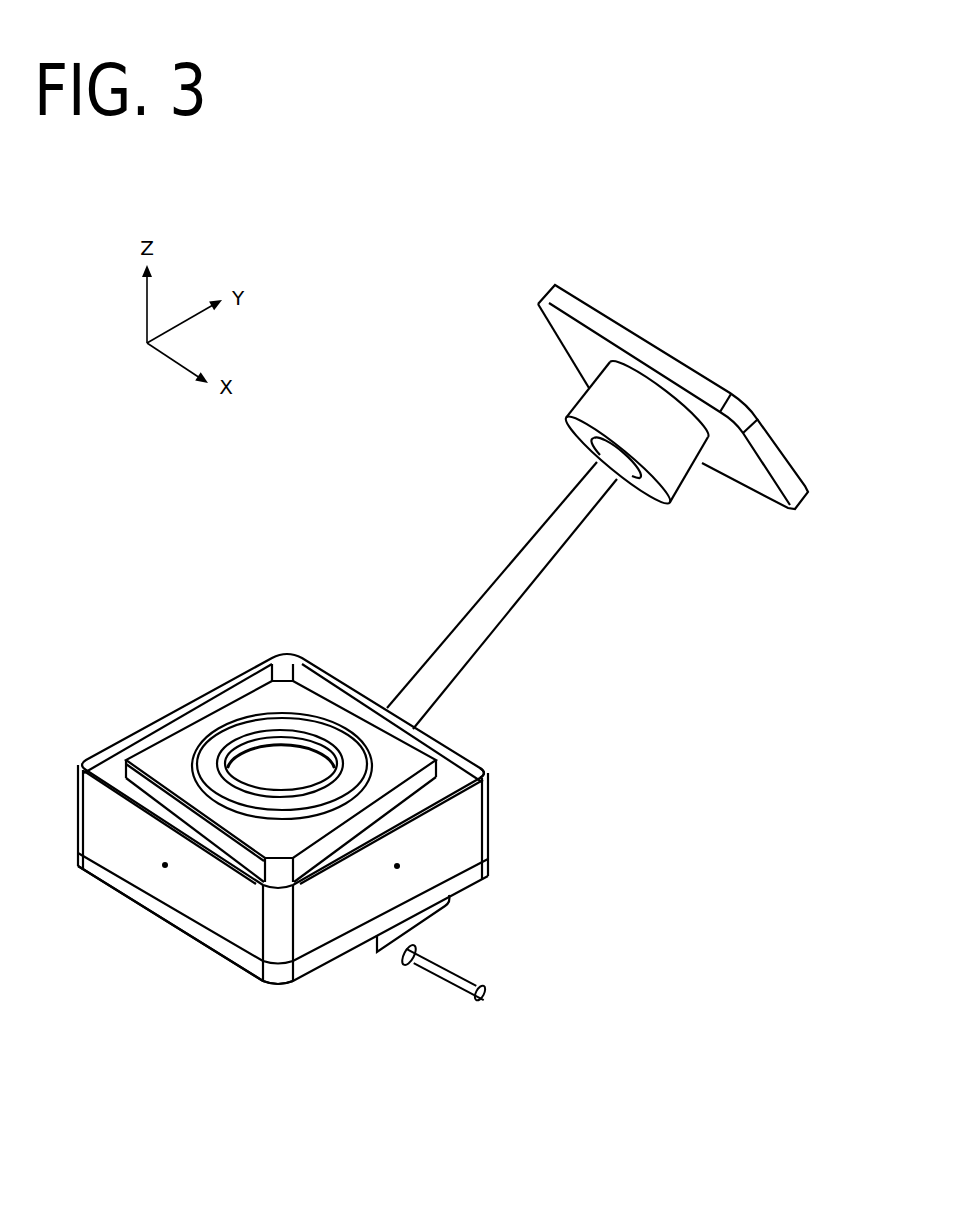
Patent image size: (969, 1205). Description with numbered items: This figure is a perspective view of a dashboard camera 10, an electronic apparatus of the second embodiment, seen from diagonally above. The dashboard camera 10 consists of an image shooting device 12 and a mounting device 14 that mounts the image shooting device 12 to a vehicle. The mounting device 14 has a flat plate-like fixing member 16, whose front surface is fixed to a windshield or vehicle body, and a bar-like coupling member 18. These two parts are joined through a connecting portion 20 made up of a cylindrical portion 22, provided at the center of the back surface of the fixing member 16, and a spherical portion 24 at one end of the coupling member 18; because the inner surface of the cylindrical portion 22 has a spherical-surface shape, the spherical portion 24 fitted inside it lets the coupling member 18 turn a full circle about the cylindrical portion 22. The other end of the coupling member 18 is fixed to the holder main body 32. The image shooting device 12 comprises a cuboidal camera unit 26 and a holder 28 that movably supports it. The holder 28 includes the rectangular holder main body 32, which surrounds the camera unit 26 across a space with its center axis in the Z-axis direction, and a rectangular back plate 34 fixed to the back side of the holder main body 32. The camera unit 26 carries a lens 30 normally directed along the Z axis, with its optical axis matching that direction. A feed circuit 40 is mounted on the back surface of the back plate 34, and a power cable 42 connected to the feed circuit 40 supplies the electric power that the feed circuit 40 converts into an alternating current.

The dashboard camera 10 is at (383, 530).
The image shooting device 12 is at (500, 818).
The mounting device 14 is at (536, 598).
The fixing member 16 is at (673, 363).
The coupling member 18 is at (478, 612).
The connecting portion 20 is at (560, 393).
The cylindrical portion 22 is at (680, 462).
The spherical portion 24 is at (625, 483).
The camera unit 26 is at (213, 690).
The holder 28 is at (492, 773).
The lens 30 is at (262, 768).
The holder main body 32 is at (463, 837).
The back plate 34 is at (180, 925).
The feed circuit 40 is at (358, 957).
The power cable 42 is at (445, 973).